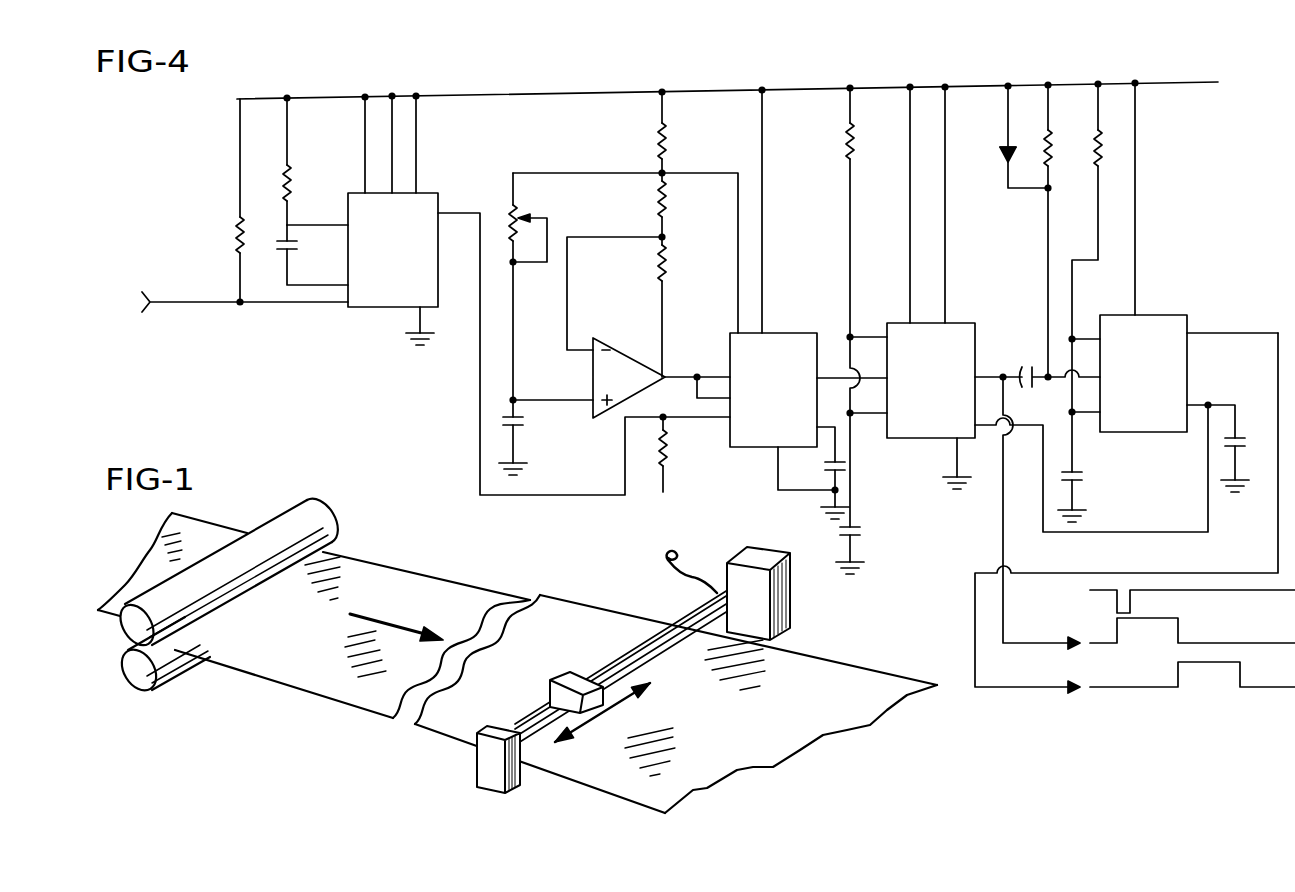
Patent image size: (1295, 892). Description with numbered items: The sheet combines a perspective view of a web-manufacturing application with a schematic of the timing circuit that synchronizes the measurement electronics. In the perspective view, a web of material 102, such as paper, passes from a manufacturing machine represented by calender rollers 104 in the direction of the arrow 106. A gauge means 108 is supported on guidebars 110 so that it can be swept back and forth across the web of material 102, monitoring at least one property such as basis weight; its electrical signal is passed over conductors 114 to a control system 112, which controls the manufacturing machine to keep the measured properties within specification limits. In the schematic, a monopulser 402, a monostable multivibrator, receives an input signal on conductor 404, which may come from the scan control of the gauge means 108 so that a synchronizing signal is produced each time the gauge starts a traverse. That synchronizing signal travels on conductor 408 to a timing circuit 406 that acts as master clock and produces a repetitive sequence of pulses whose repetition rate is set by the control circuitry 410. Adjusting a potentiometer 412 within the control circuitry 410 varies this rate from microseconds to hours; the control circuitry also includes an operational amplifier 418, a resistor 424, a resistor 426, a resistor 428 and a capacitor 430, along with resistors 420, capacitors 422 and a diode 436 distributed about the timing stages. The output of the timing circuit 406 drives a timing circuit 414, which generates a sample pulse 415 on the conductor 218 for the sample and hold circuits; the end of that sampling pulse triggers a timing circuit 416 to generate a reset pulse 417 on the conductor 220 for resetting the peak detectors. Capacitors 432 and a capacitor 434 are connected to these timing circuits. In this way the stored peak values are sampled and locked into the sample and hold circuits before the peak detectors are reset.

In FIG. 1, the web of material 102 is at (422, 727).
In FIG. 1, the calender rollers 104 is at (118, 636).
In FIG. 1, the arrow 106 is at (350, 617).
In FIG. 1, the gauge means 108 is at (570, 668).
In FIG. 1, the guidebars 110 is at (530, 707).
In FIG. 1, the control system 112 is at (790, 605).
In FIG. 1, the conductors 114 is at (690, 578).
In FIG. 4, the conductor 218 is at (1001, 525).
In FIG. 4, the conductor 220 is at (975, 604).
In FIG. 4, the monopulser 402 is at (356, 308).
In FIG. 4, the conductor 404 is at (195, 303).
In FIG. 4, the timing circuit 406 is at (796, 332).
In FIG. 4, the conductor 408 is at (606, 494).
In FIG. 4, the control circuitry 410 is at (703, 80).
In FIG. 4, the potentiometer 412 is at (511, 200).
In FIG. 4, the timing circuit 414 is at (980, 320).
In FIG. 4, the sample pulse 415 is at (1112, 630).
In FIG. 4, the timing circuit 416 is at (1160, 312).
In FIG. 4, the reset pulse 417 is at (1176, 668).
In FIG. 4, the operational amplifier 418 is at (618, 348).
In FIG. 4, the resistors 420 is at (282, 182).
In FIG. 4, the capacitors 422 is at (281, 255).
In FIG. 4, the resistor 424 is at (665, 143).
In FIG. 4, the resistor 426 is at (656, 205).
In FIG. 4, the resistor 428 is at (664, 260).
In FIG. 4, the capacitor 430 is at (524, 426).
In FIG. 4, the capacitors 432 is at (852, 470).
In FIG. 4, the capacitor 434 is at (1088, 474).
In FIG. 4, the diode 436 is at (1005, 150).